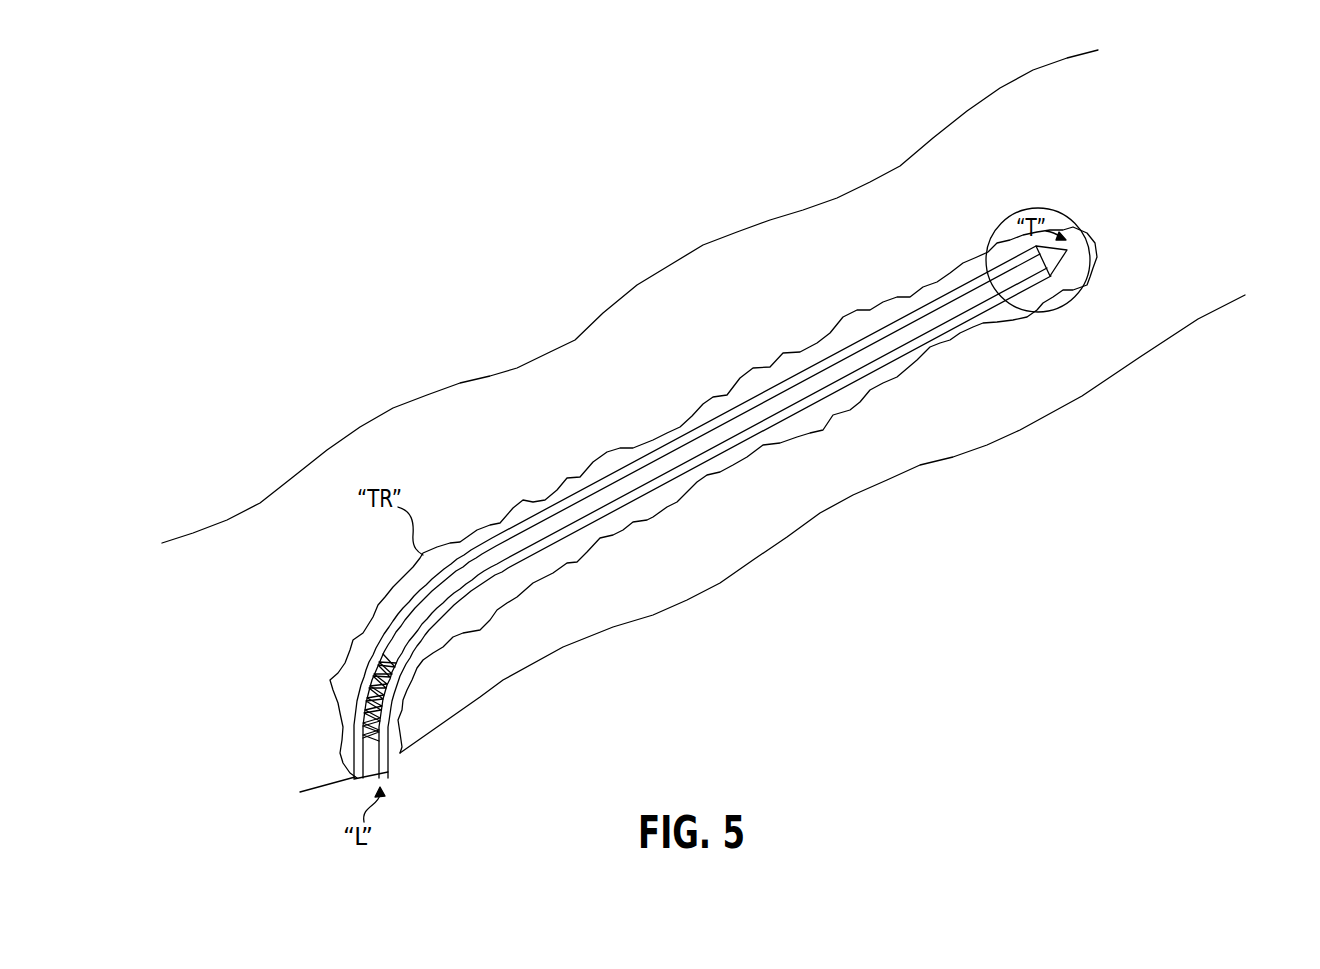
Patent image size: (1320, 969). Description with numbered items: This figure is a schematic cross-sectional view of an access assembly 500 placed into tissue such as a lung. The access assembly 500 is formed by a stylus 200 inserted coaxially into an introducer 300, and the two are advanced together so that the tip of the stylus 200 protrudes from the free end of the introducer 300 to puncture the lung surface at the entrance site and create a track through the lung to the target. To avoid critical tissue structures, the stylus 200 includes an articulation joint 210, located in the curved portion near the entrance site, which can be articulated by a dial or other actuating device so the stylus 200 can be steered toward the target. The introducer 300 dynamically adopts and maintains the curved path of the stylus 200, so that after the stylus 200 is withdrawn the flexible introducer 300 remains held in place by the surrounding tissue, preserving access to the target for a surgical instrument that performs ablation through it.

The stylus 200 is at (1078, 228).
The articulation joint 210 is at (358, 714).
The introducer 300 is at (661, 446).
The access assembly 500 is at (522, 483).